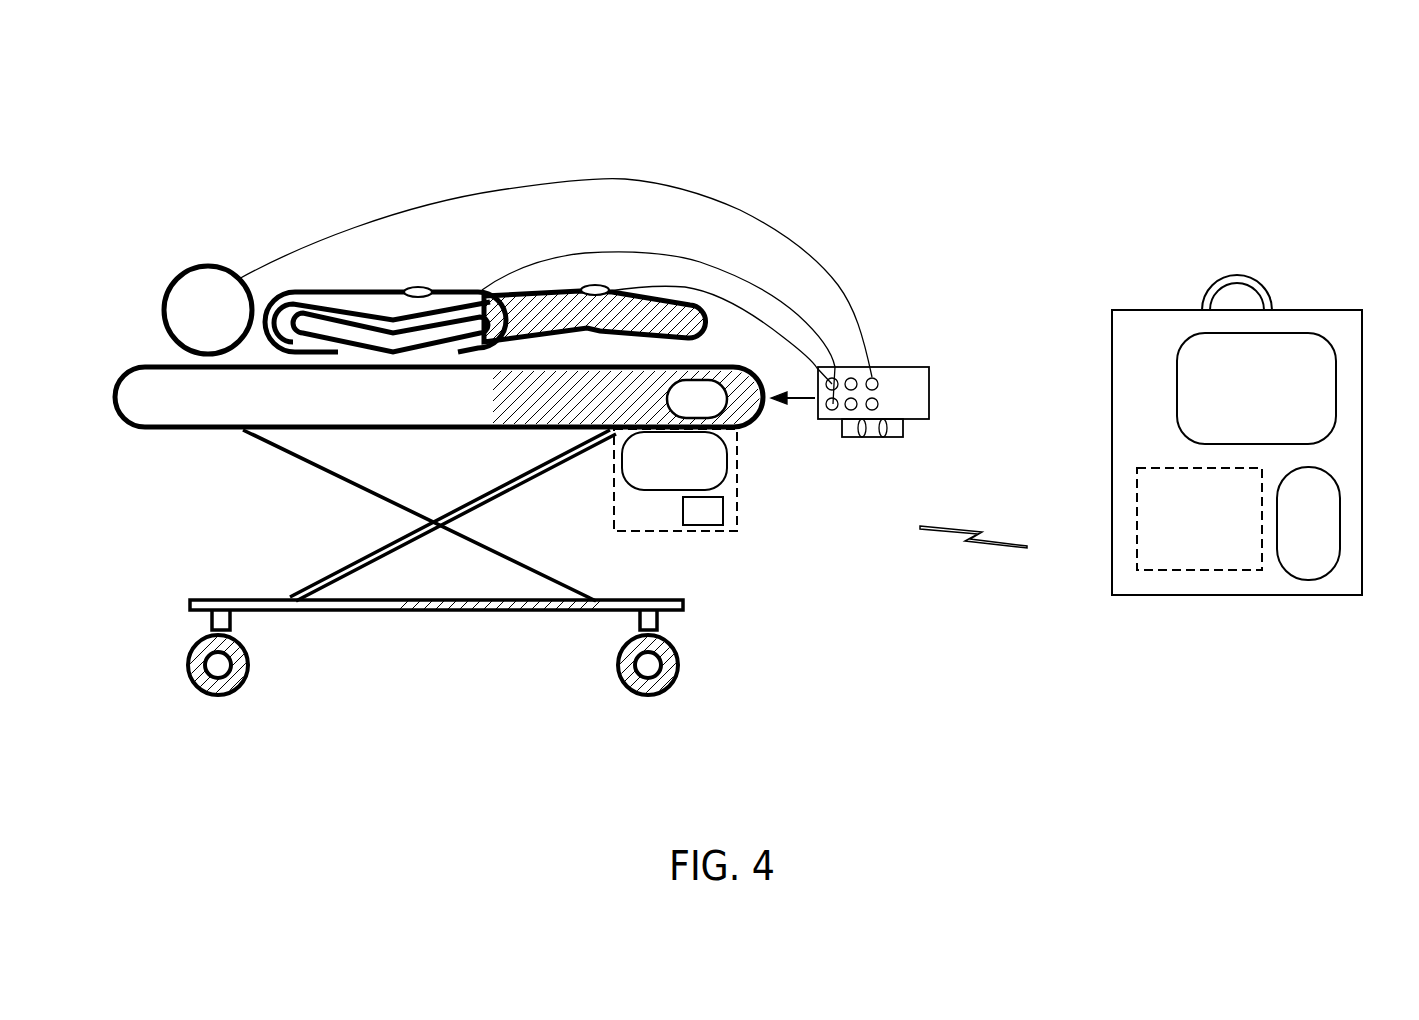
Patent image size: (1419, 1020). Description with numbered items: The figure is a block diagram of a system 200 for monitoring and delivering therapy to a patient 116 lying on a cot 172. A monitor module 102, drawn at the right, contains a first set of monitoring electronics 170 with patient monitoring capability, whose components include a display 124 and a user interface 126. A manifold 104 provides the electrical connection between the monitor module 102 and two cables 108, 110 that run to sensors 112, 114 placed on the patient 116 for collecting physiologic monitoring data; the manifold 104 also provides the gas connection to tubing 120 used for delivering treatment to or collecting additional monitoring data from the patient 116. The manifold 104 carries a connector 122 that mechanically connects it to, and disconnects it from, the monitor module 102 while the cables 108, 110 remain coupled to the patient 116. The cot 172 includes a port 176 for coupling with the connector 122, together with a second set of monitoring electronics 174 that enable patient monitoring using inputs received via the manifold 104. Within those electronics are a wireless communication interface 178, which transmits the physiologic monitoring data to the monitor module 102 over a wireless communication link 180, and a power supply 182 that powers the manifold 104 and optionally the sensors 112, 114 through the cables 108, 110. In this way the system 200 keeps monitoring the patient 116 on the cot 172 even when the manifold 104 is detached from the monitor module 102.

The system 200 is at (312, 120).
The tubing 120 is at (612, 180).
The cable 108 is at (575, 256).
The cable 110 is at (680, 287).
The sensor 112 is at (417, 287).
The sensor 114 is at (596, 285).
The patient 116 is at (700, 340).
The manifold 104 is at (921, 386).
The connector 122 is at (897, 427).
The cot 172 is at (193, 453).
The port 176 is at (722, 407).
The second set of monitoring electronics 174 is at (721, 533).
The power supply 182 is at (727, 465).
The wireless communication interface 178 is at (723, 505).
The wireless communication link 180 is at (990, 537).
The monitor module 102 is at (1166, 310).
The display 124 is at (1297, 333).
The user interface 126 is at (1340, 546).
The first set of monitoring electronics 170 is at (1164, 573).